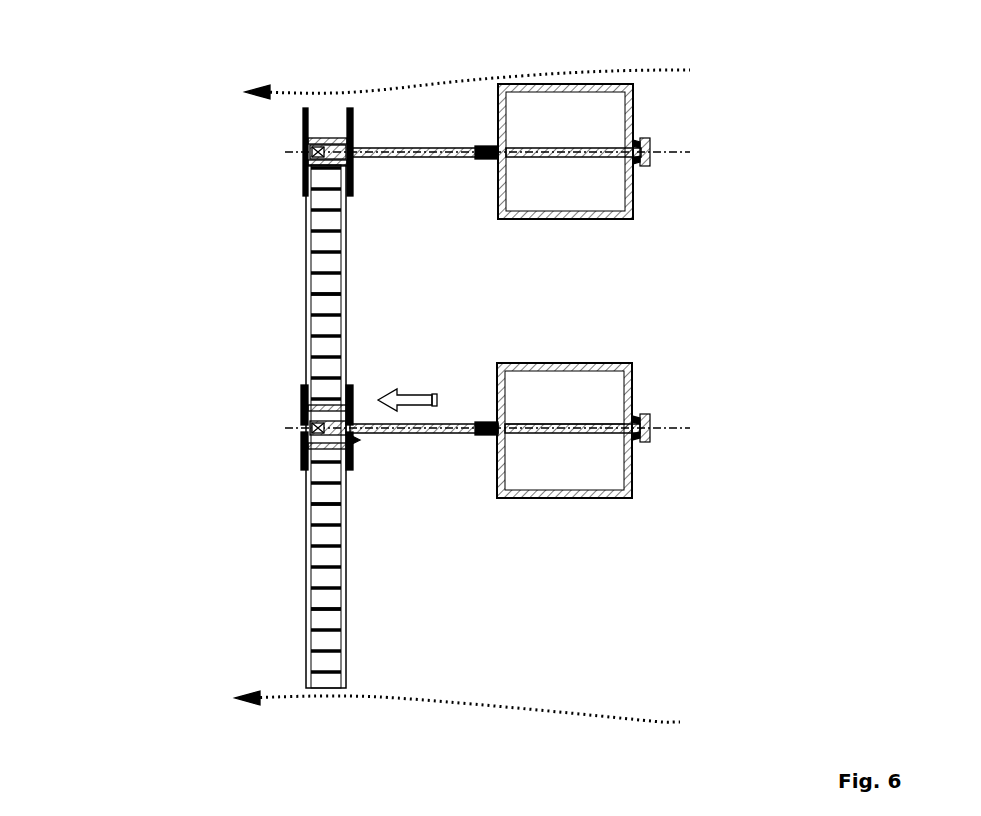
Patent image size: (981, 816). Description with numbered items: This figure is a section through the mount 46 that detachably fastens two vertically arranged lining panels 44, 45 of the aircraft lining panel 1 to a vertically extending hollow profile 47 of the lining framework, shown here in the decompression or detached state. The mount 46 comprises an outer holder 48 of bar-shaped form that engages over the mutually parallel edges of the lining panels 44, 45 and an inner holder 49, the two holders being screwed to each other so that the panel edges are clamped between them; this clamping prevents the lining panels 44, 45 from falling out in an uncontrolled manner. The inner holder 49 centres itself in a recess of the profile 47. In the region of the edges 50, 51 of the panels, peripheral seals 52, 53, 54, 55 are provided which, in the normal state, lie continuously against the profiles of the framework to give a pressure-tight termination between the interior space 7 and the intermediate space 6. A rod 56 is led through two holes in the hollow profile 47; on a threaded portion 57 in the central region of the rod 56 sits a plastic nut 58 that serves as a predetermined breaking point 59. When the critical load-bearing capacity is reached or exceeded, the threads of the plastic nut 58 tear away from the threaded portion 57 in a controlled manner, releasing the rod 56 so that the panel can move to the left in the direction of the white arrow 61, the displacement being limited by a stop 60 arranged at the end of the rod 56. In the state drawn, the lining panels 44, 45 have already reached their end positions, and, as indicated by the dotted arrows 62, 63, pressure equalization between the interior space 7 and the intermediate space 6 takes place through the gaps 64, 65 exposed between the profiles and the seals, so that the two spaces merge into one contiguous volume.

The lining panel 1 is at (125, 120).
The intermediate space 6 is at (582, 153).
The interior space 7 is at (341, 165).
The lining panel 44 is at (306, 303).
The lining panel 45 is at (311, 609).
The mount 46 is at (232, 420).
The profile 47 is at (598, 497).
The outer holder 48 is at (301, 452).
The inner holder 49 is at (360, 440).
The edge 50 is at (296, 345).
The edge 51 is at (290, 510).
The peripheral seal 52 is at (301, 400).
The peripheral seal 53 is at (300, 475).
The peripheral seal 54 is at (348, 385).
The peripheral seal 55 is at (349, 470).
The rod 56 is at (594, 432).
The threaded portion 57 is at (487, 424).
The plastic nut 58 is at (645, 437).
The predetermined breaking point 59 is at (648, 368).
The stop 60 is at (645, 420).
The white arrow 61 is at (402, 400).
The arrow 62 is at (345, 90).
The arrow 63 is at (375, 700).
The gap 64 is at (408, 188).
The gap 65 is at (428, 472).